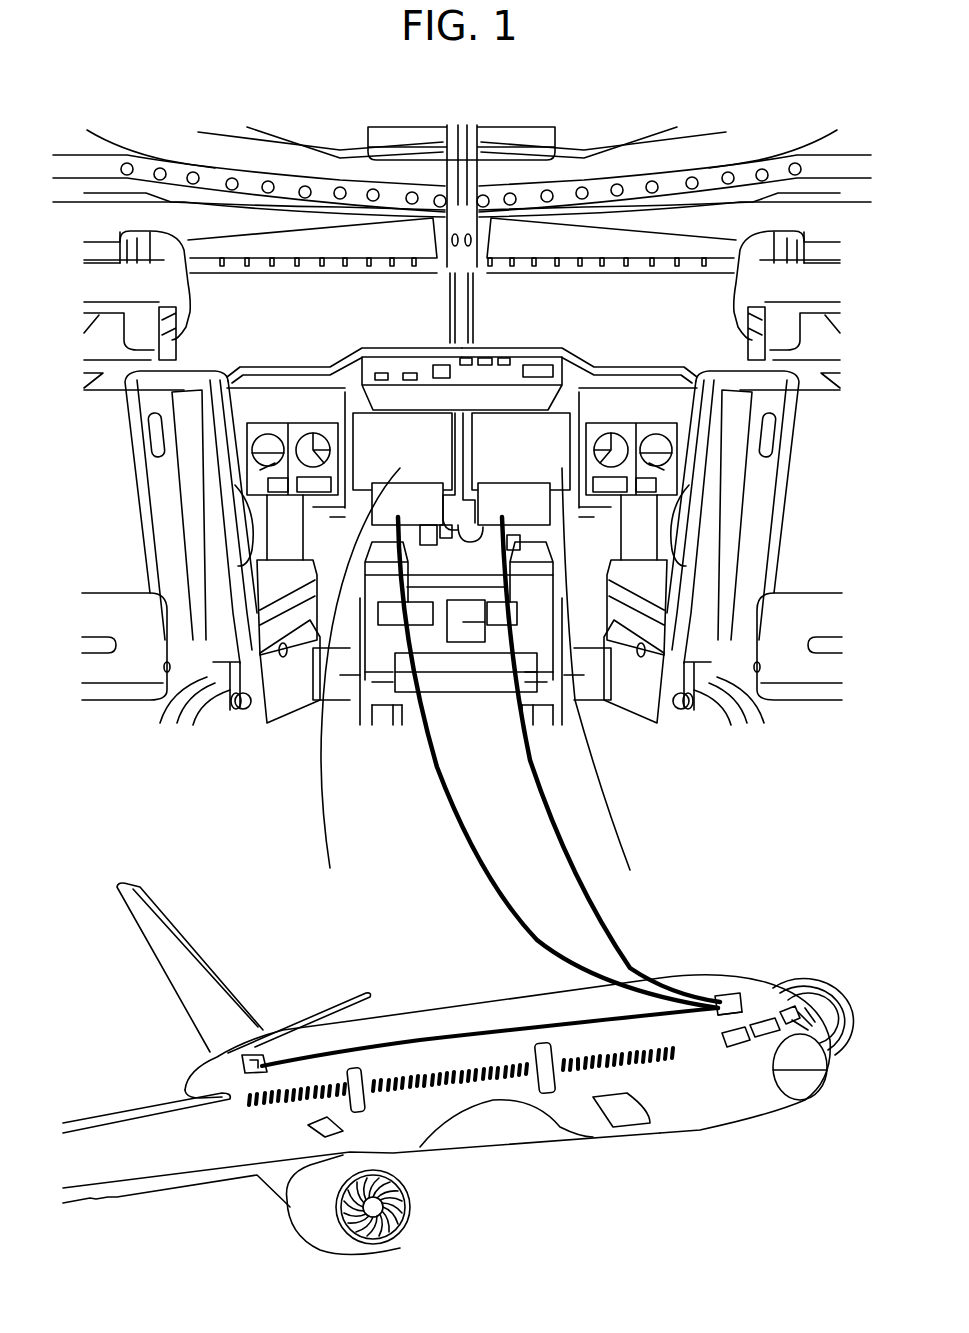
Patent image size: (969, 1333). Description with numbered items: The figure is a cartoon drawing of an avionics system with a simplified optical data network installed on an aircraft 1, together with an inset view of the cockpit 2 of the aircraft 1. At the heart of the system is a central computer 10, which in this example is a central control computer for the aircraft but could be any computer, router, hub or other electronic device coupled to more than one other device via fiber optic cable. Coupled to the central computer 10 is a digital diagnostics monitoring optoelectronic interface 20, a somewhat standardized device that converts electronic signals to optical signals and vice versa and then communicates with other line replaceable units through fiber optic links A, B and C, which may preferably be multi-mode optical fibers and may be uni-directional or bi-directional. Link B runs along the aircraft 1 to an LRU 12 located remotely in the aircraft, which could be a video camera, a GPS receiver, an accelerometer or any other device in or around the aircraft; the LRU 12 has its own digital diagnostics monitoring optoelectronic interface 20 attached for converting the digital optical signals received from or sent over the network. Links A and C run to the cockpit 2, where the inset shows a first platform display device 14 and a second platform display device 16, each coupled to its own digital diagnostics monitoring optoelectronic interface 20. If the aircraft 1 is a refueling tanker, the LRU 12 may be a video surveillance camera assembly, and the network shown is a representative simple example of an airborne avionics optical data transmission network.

The aircraft 1 is at (437, 1007).
The cockpit 2 is at (462, 590).
The central computer 10 is at (725, 1012).
The LRU 12 is at (190, 1078).
The first platform display device 14 is at (382, 525).
The second platform display device 16 is at (545, 525).
The digital diagnostics monitoring optoelectronic interface 20 is at (250, 1055).
The fiber optic link A is at (463, 838).
The fiber optic link B is at (503, 1030).
The fiber optic link C is at (543, 810).